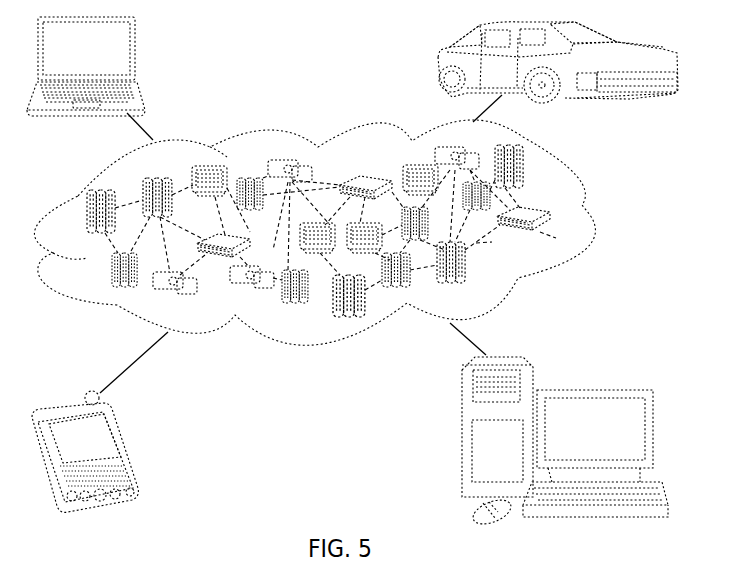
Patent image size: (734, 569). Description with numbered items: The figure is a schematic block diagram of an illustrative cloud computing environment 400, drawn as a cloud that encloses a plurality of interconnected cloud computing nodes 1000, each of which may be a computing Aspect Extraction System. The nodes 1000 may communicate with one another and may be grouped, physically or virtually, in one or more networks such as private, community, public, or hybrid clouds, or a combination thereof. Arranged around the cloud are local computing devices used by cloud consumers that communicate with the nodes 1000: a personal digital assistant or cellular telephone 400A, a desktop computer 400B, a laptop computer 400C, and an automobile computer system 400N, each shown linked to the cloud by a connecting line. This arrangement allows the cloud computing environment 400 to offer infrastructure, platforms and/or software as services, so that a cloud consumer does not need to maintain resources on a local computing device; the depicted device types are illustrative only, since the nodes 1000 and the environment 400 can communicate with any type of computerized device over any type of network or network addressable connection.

The cloud computing environment 400 is at (592, 218).
The computing node 1000 is at (555, 237).
The personal digital assistant or cellular telephone 400A is at (125, 446).
The desktop computer 400B is at (602, 377).
The laptop computer 400C is at (138, 56).
The automobile computer system 400N is at (438, 68).